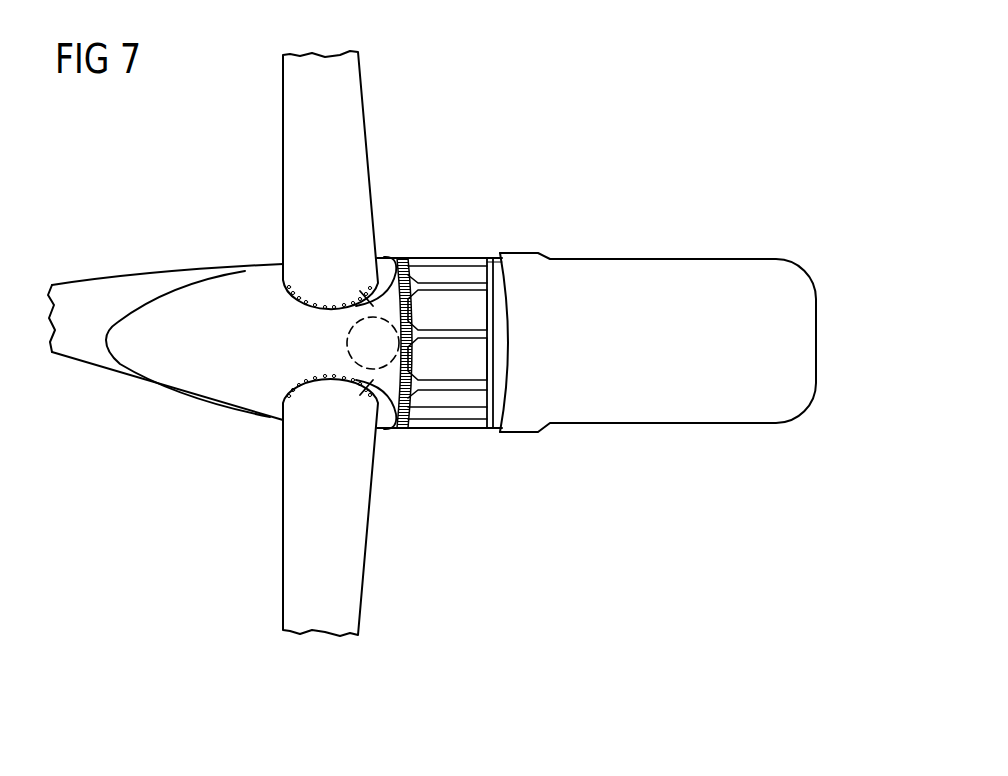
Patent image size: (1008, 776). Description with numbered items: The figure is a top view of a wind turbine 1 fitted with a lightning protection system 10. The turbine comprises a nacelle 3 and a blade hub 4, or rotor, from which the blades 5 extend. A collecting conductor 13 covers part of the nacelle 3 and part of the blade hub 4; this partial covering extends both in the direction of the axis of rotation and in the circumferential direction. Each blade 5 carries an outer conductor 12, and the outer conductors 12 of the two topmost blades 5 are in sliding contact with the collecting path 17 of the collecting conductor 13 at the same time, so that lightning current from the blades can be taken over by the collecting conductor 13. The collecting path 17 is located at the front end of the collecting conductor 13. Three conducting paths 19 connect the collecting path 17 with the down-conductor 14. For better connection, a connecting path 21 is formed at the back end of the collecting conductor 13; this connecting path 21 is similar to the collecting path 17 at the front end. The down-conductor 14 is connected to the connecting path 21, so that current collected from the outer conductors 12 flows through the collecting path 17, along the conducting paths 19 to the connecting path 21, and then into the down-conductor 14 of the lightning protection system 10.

The wind turbine 1 is at (580, 550).
The nacelle 3 is at (696, 274).
The blade hub 4 is at (135, 327).
The blades 5 is at (298, 512).
The lightning protection system 10 is at (470, 222).
The outer conductors 12 is at (370, 306).
The collecting conductor 13 is at (490, 312).
The down-conductor 14 is at (493, 263).
The collecting path 17 is at (411, 306).
The conducting paths 19 is at (477, 334).
The connecting path 21 is at (502, 355).